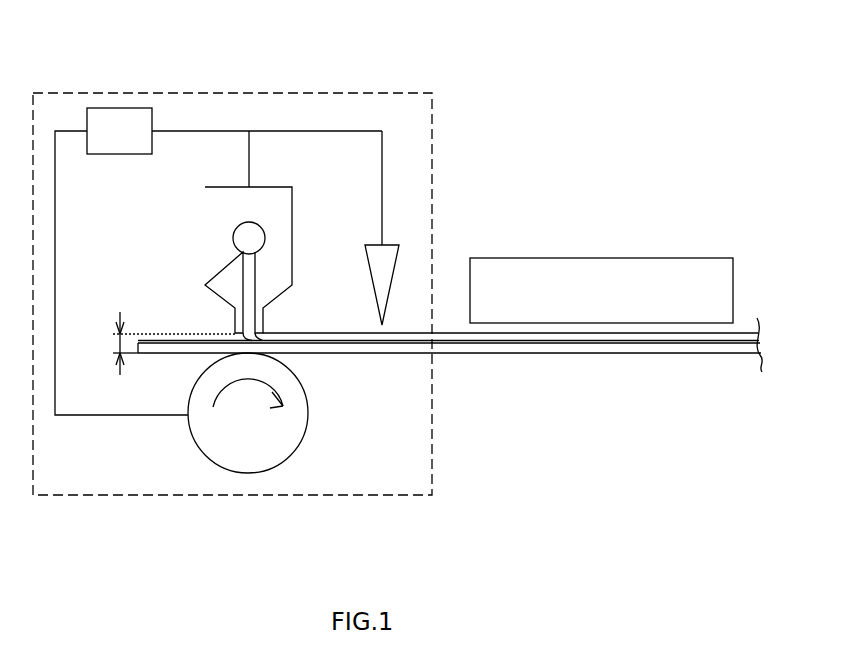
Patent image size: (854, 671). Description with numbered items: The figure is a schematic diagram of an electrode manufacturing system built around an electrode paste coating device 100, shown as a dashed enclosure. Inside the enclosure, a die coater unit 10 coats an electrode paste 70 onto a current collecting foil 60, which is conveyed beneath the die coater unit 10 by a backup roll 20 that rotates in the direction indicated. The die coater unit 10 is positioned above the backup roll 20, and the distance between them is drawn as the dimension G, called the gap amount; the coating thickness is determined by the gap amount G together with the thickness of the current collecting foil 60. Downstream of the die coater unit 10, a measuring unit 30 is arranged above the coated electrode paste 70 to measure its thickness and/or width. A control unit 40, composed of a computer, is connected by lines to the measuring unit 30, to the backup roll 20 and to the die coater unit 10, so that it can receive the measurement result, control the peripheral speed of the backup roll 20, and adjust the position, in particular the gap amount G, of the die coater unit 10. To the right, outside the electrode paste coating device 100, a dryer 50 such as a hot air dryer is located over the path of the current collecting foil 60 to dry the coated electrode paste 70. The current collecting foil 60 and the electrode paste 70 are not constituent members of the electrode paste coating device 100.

The electrode paste coating device 100 is at (432, 138).
The die coater unit 10 is at (215, 231).
The backup roll 20 is at (238, 462).
The measuring unit 30 is at (390, 248).
The control unit 40 is at (105, 117).
The dryer 50 is at (683, 277).
The current collecting foil 60 is at (333, 355).
The electrode paste 70 is at (308, 337).
The gap amount G is at (161, 343).